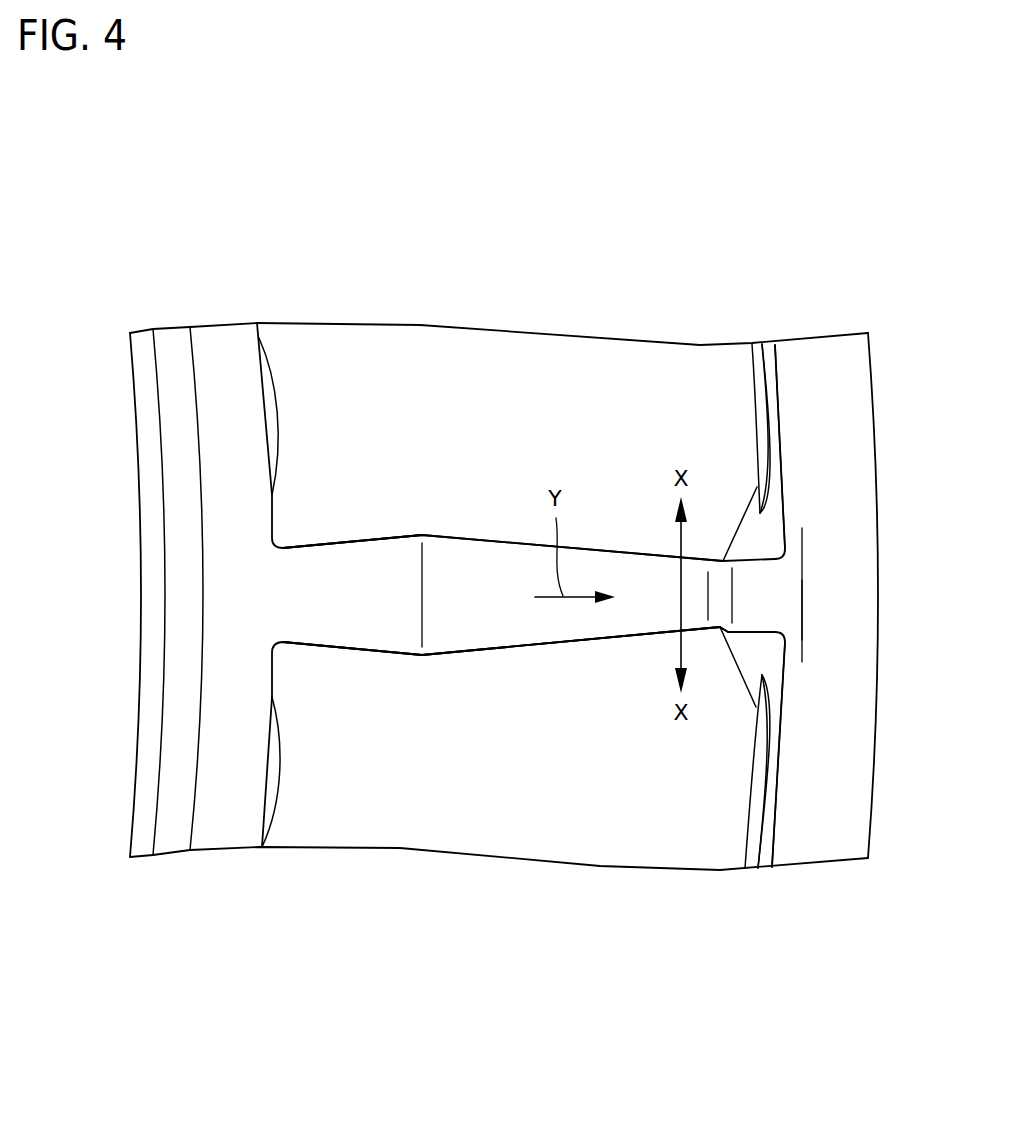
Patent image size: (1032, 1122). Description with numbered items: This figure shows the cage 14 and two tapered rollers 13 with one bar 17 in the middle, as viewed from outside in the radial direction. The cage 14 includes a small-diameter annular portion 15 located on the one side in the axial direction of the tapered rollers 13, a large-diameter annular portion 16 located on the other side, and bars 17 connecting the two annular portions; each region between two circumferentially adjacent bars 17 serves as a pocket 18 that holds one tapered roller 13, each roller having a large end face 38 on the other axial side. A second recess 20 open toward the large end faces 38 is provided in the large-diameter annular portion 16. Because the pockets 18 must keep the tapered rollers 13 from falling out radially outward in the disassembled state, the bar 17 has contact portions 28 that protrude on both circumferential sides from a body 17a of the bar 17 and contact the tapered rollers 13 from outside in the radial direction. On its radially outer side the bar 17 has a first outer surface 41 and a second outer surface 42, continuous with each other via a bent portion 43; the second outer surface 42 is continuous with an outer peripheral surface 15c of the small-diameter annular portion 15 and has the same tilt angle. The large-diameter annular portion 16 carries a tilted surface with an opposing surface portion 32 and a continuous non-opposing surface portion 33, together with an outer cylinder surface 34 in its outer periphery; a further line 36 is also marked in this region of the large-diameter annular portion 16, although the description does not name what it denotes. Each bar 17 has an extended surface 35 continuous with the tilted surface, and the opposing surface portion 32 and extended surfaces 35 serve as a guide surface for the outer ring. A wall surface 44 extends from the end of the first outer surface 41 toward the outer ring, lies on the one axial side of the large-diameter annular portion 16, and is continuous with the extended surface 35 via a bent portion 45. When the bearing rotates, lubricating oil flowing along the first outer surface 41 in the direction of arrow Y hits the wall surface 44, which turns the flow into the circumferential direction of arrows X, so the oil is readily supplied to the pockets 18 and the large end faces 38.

The tapered roller 13 is at (470, 347).
The cage 14 is at (150, 617).
The small-diameter annular portion 15 is at (247, 572).
The outer peripheral surface of the small-diameter annular portion 15c is at (222, 763).
The large-diameter annular portion 16 is at (877, 803).
The bar 17 is at (498, 648).
The body of the bar 17a is at (495, 578).
The pocket 18 is at (740, 395).
The second recess 20 is at (762, 480).
The contact portion 28 is at (422, 535).
The opposing surface portion 32 is at (745, 608).
The non-opposing surface portion 33 is at (783, 602).
The outer cylinder surface 34 is at (847, 581).
The extended surface 35 is at (762, 618).
The outlet plane 36 is at (803, 557).
The large end face 38 is at (763, 427).
The first outer surface 41 is at (565, 627).
The second outer surface 42 is at (345, 570).
The bent portion 43 is at (422, 608).
The wall surface 44 is at (718, 590).
The bent portion 45 is at (740, 583).